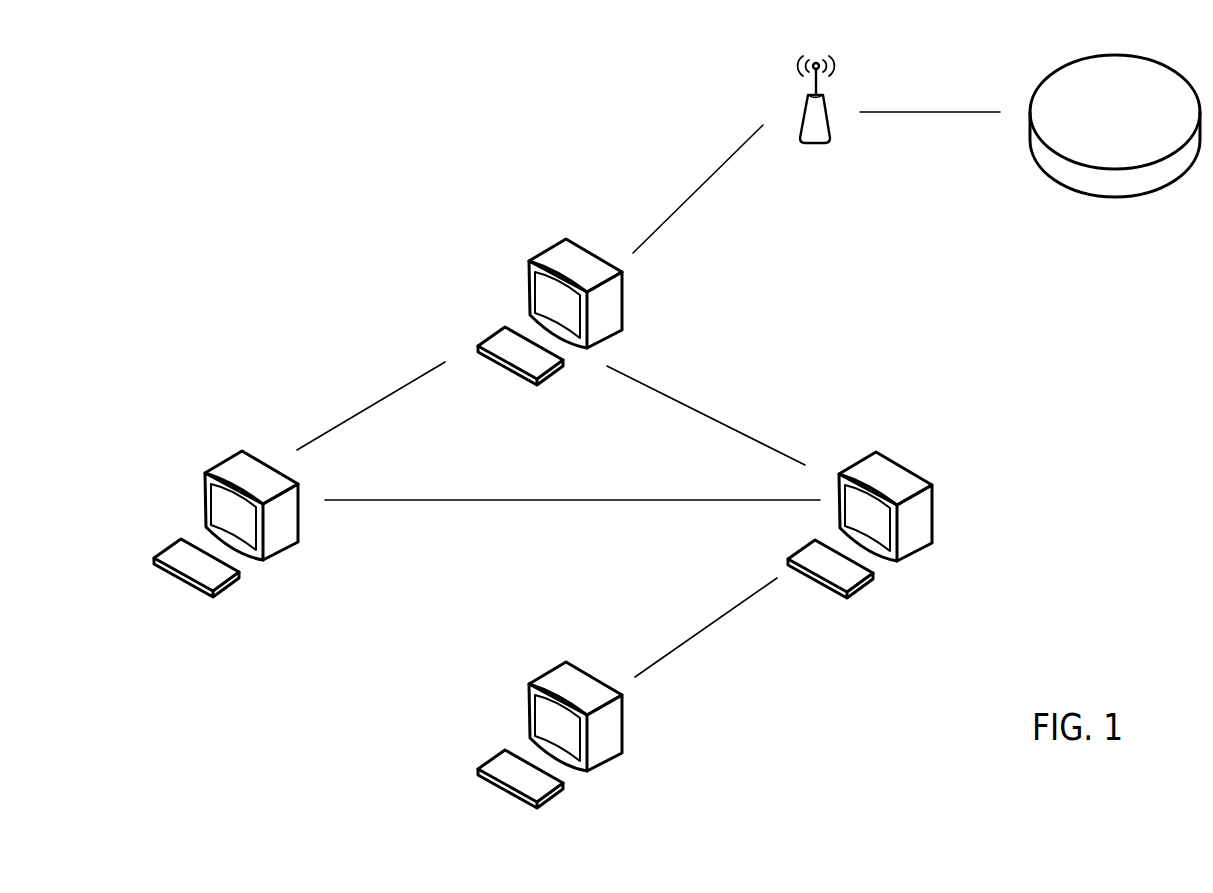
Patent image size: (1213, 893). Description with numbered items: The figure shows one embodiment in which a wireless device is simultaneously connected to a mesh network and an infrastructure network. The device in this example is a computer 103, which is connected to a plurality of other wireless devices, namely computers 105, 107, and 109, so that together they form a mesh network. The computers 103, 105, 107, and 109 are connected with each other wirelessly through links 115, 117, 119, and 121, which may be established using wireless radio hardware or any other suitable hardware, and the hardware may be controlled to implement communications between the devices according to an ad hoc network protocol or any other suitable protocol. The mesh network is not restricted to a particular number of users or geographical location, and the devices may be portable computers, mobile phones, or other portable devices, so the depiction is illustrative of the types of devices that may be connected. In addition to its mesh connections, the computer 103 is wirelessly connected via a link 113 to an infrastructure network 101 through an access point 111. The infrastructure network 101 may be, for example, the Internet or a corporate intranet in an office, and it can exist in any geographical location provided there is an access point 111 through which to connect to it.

The infrastructure network 101 is at (1097, 125).
The computer 103 is at (557, 245).
The computer 105 is at (232, 457).
The computer 107 is at (548, 673).
The computer 109 is at (867, 453).
The access point 111 is at (792, 50).
The link 113 is at (927, 110).
The link 115 is at (387, 393).
The link 117 is at (583, 500).
The link 119 is at (707, 628).
The link 121 is at (688, 405).